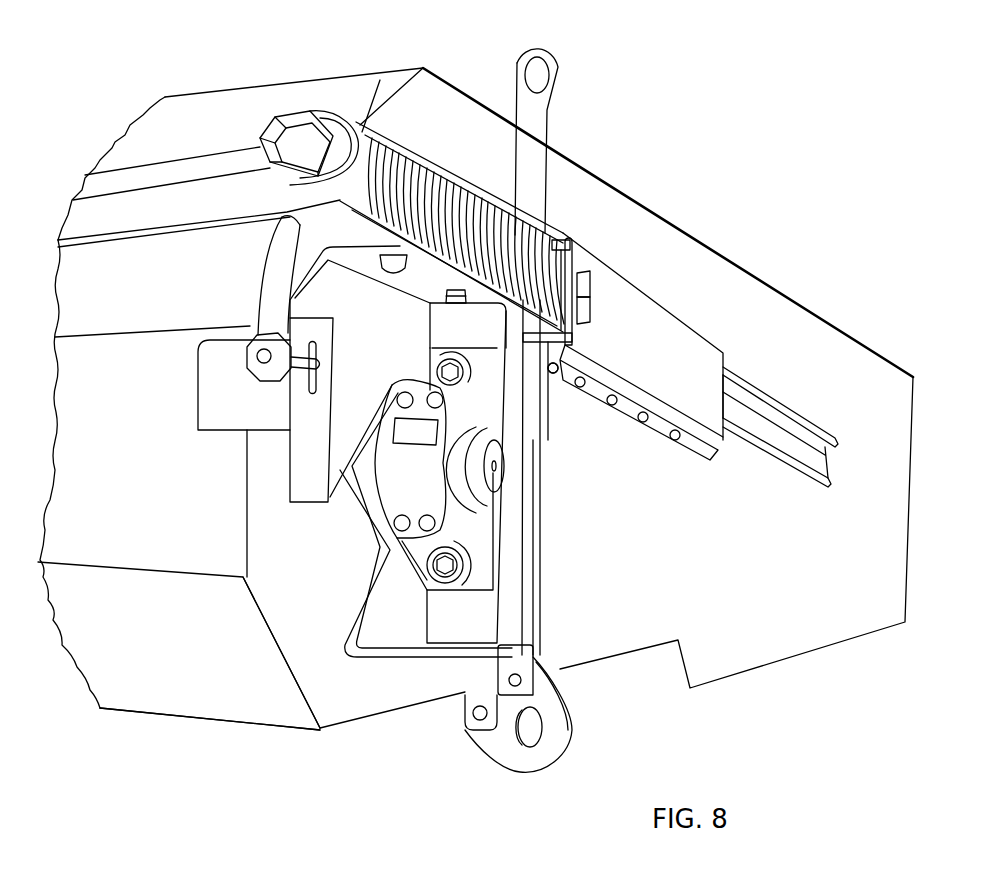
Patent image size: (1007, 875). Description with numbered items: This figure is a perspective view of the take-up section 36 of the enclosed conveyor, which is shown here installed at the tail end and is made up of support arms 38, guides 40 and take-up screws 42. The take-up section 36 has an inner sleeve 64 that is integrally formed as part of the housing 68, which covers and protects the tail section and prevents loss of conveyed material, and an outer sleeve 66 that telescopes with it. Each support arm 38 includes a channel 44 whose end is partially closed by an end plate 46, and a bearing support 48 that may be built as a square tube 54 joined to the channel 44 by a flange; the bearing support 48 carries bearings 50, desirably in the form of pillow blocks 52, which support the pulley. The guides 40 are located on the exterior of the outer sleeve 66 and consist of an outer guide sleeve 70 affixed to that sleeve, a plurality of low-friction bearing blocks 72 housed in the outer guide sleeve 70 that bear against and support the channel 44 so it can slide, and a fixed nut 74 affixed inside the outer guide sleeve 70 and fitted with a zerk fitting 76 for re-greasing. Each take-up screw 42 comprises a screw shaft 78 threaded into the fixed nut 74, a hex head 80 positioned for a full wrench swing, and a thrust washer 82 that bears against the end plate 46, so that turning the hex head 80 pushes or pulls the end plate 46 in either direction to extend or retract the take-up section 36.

The take-up section 36 is at (143, 415).
The support arms 38 is at (520, 212).
The guides 40 is at (558, 242).
The take-up screws 42 is at (433, 200).
The channel 44 is at (760, 393).
The end plate 46 is at (387, 133).
The bearing support 48 is at (433, 338).
The bearings 50 is at (497, 514).
The pillow blocks 52 is at (483, 540).
The square tube 54 is at (513, 593).
The inner sleeve 64 is at (560, 660).
The outer sleeve 66 is at (263, 692).
The housing 68 is at (335, 693).
The outer guide sleeve 70 is at (665, 388).
The bearing blocks 72 is at (518, 232).
The fixed nut 74 is at (563, 352).
The zerk fitting 76 is at (590, 270).
The screw shaft 78 is at (592, 297).
The hex head 80 is at (281, 137).
The thrust washer 82 is at (340, 120).